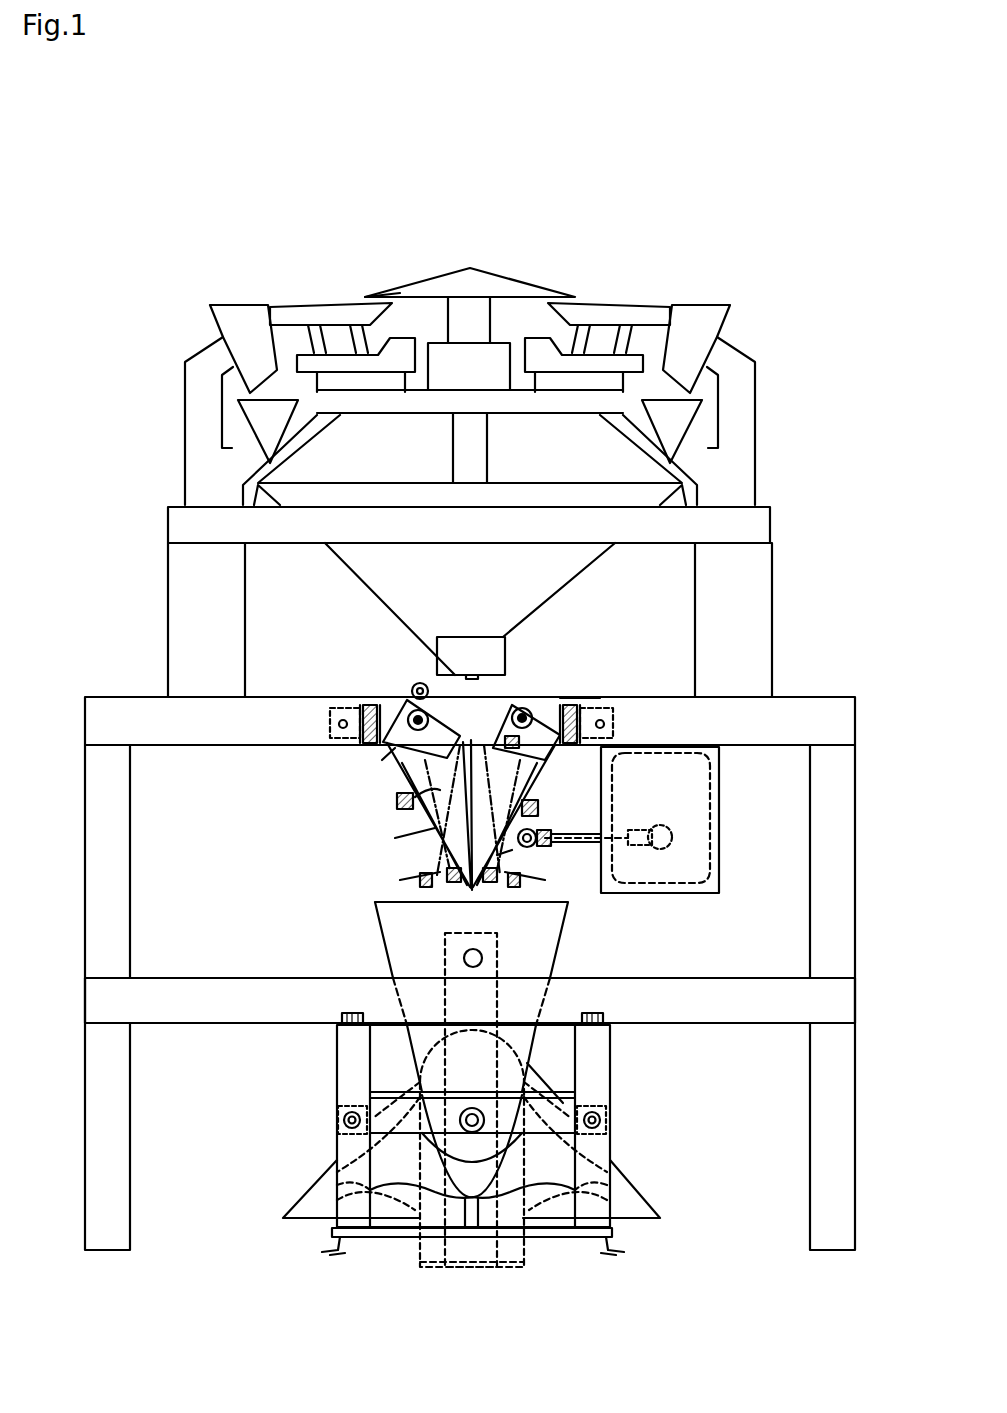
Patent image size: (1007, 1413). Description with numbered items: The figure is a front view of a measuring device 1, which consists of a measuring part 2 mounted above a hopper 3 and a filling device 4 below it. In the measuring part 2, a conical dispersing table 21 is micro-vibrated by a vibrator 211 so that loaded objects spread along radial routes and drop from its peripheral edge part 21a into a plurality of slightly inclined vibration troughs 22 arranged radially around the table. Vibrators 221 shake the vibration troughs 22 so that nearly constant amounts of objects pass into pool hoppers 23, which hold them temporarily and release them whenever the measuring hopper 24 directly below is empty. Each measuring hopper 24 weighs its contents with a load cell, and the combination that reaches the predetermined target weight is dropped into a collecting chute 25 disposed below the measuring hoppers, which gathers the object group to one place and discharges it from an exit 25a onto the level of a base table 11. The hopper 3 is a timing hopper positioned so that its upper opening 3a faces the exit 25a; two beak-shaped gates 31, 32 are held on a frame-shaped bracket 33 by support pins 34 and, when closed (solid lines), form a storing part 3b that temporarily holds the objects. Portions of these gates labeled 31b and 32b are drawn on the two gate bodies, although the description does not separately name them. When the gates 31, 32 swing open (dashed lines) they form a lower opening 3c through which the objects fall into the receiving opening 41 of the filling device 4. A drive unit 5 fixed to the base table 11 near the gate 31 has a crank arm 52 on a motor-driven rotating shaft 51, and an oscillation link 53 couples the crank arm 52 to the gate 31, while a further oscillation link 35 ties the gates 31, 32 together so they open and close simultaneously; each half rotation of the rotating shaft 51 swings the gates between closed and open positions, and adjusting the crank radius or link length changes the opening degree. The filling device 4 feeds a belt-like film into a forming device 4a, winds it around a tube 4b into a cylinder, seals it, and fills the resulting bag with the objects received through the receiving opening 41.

The measuring device 1 is at (198, 224).
The measuring part 2 is at (757, 350).
The dispersing table 21 is at (471, 267).
The peripheral edge part 21a is at (367, 296).
The vibrator 211 is at (470, 368).
The vibration troughs 22 is at (325, 304).
The vibrators 221 is at (349, 362).
The pool hoppers 23 is at (245, 305).
The measuring hoppers 24 is at (245, 425).
The collecting chute 25 is at (588, 566).
The exit 25a is at (434, 638).
The base table 11 is at (803, 697).
The hopper 3 is at (386, 694).
The upper opening 3a is at (470, 712).
The storing part 3b is at (428, 876).
The lower opening 3c is at (445, 905).
The gate 31 is at (430, 850).
The side wall of hopper body 31b is at (397, 798).
The gate 32 is at (512, 850).
The gate arm 32b is at (498, 798).
The frame-shaped bracket 33 is at (565, 690).
The support pins 34 is at (335, 716).
The oscillation link 35 is at (382, 760).
The drive unit 5 is at (720, 796).
The rotating shaft 51 is at (675, 838).
The crank arm 52 is at (665, 848).
The oscillation link 53 is at (606, 826).
The filling device 4 is at (540, 1047).
The forming device 4a is at (422, 1092).
The tube 4b is at (412, 1200).
The receiving opening 41 is at (556, 974).